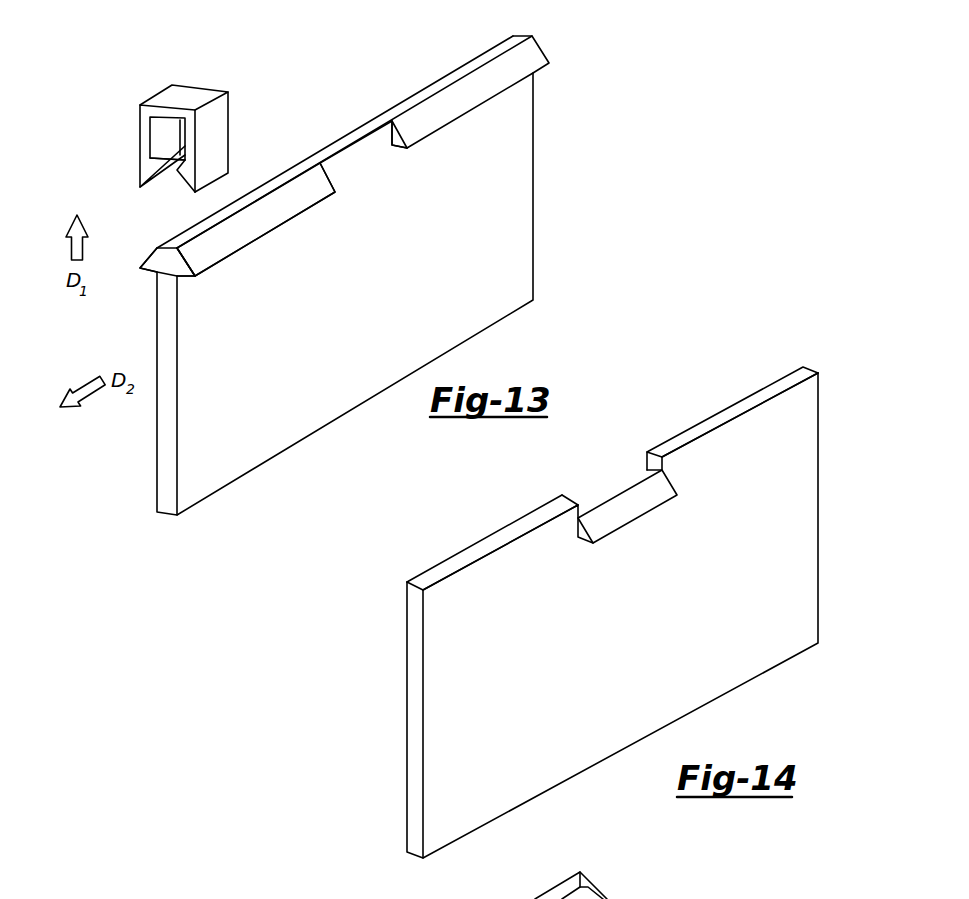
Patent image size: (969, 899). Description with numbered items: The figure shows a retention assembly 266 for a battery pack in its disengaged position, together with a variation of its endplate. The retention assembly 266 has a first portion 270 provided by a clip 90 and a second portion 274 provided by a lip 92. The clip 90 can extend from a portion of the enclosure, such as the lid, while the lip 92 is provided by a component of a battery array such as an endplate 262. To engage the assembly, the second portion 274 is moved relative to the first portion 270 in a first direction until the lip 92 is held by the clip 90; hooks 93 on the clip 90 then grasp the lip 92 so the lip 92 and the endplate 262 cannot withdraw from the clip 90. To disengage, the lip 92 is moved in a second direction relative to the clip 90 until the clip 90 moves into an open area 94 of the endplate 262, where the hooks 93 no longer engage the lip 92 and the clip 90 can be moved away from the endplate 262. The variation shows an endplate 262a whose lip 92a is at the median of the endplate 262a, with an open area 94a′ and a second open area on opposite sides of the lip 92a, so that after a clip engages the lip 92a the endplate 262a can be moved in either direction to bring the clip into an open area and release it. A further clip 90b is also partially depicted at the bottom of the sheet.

In FIG. 13, the endplate 262 is at (520, 258).
In FIG. 13, the retention assembly 266 is at (325, 90).
In FIG. 13, the lip 92 is at (152, 262).
In FIG. 13, the second portion 274 is at (223, 242).
In FIG. 13, the open area 94 is at (371, 170).
In FIG. 13, the first portion 270 is at (188, 96).
In FIG. 13, the clip 90 is at (145, 174).
In FIG. 13, the hooks 93 is at (166, 158).
In FIG. 14, the endplate 262a is at (773, 607).
In FIG. 14, the lip 92a is at (632, 510).
In FIG. 14, the open area 94a′ is at (505, 573).
In FIG. 14, the receiving box 90b is at (653, 898).